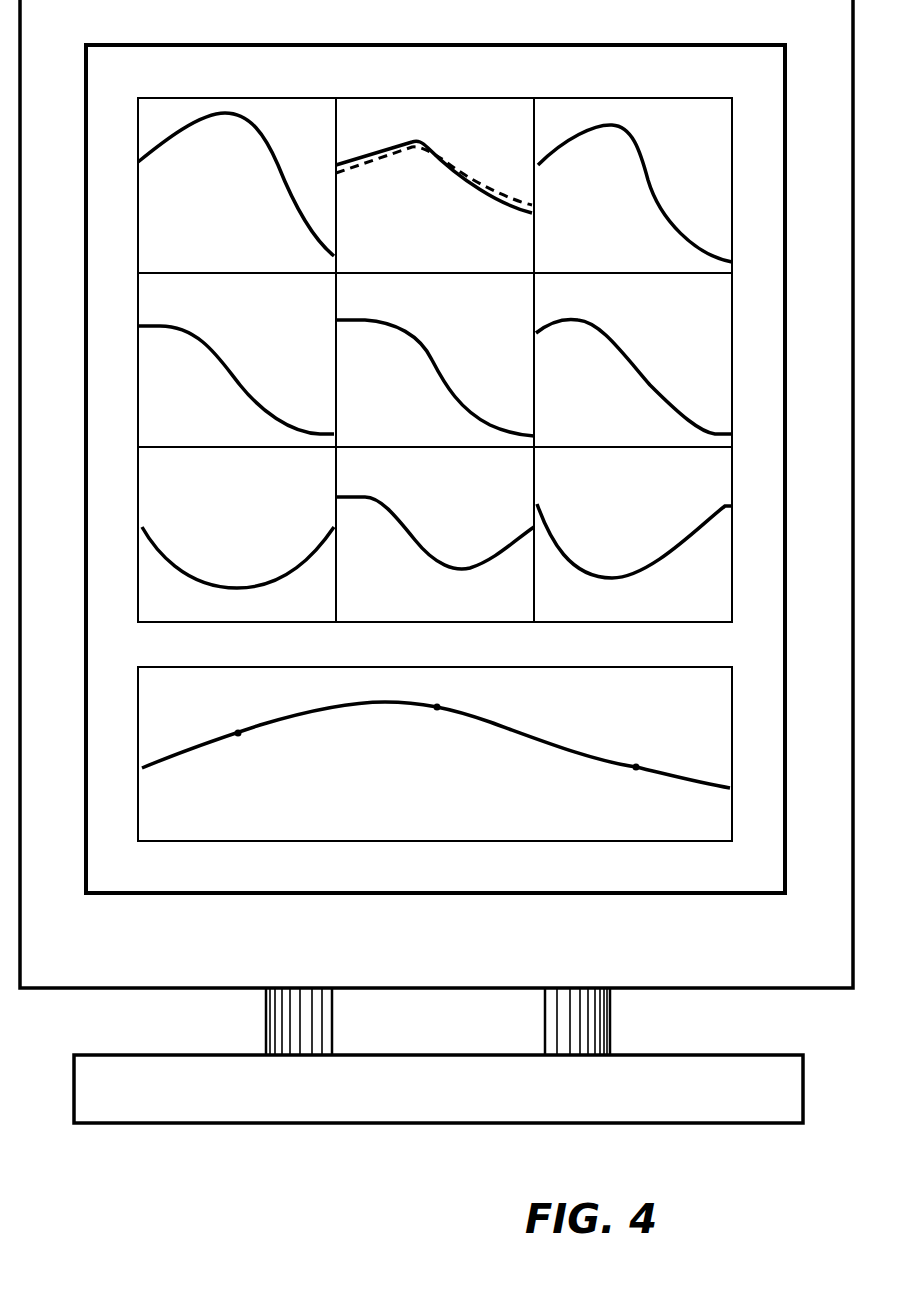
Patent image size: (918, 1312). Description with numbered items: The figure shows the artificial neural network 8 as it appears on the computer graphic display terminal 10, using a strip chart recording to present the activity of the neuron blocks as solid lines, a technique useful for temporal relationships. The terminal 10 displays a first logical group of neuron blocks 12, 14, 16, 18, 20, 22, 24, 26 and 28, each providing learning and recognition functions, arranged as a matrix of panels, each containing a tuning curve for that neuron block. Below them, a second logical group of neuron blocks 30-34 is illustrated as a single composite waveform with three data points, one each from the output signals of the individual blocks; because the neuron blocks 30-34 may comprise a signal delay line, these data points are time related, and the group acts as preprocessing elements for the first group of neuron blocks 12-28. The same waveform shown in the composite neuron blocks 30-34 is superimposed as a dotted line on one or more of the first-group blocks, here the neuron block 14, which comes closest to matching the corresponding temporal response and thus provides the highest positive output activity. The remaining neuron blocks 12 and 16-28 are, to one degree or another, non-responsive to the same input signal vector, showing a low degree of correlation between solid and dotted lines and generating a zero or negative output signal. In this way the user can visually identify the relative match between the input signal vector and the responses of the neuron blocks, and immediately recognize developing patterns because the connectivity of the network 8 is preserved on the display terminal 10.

The neural network 8 is at (437, 852).
The computer graphic display terminal 10 is at (116, 991).
The neuron block 12 is at (169, 132).
The neuron block 14 is at (367, 132).
The neuron block 16 is at (565, 132).
The neuron block 18 is at (169, 306).
The neuron block 20 is at (367, 306).
The neuron block 22 is at (565, 306).
The neuron block 24 is at (169, 481).
The neuron block 26 is at (367, 481).
The neuron block 28 is at (565, 481).
The neuron blocks 30-34 is at (208, 699).